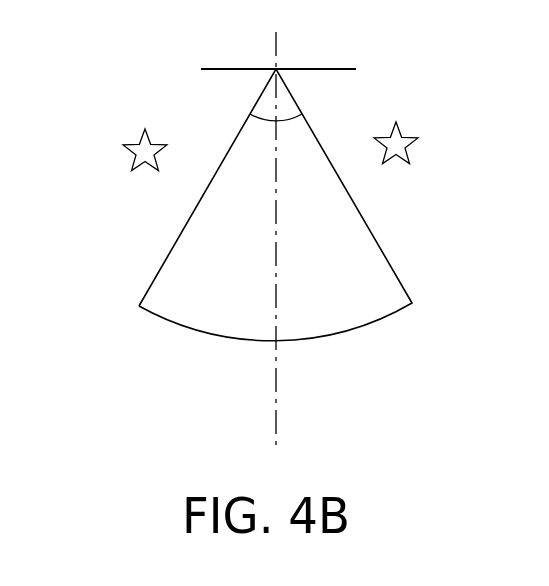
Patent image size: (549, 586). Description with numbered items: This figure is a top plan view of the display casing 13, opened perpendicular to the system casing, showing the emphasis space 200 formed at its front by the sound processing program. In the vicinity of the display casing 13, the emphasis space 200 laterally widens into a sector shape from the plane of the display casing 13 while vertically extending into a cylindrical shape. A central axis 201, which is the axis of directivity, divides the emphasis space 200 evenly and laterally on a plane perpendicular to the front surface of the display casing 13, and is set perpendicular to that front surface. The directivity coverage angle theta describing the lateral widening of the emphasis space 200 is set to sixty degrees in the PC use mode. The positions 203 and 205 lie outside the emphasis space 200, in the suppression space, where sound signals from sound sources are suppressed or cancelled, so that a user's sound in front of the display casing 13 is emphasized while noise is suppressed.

The display casing 13 is at (345, 69).
The emphasis space 200 is at (398, 272).
The central axis 201 is at (277, 418).
The position 203 is at (123, 146).
The position 205 is at (418, 138).